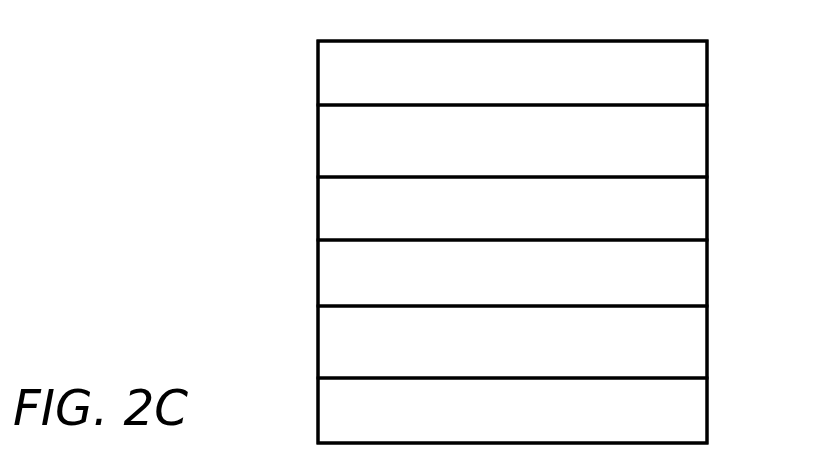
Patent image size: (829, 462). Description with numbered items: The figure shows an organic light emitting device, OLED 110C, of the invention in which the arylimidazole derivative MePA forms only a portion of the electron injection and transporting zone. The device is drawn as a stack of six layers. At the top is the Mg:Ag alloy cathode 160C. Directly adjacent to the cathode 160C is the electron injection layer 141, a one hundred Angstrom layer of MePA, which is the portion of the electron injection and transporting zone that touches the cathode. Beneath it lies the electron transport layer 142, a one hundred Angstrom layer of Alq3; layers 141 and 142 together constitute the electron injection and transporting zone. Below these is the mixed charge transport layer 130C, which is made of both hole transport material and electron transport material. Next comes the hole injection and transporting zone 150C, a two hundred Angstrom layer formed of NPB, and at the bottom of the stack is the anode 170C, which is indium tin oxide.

The OLED 110C is at (303, 57).
The cathode 160C is at (707, 72).
The electron injection layer 141 is at (707, 127).
The electron transport layer 142 is at (707, 209).
The mixed charge transport layer 130C is at (707, 272).
The hole injection and transporting zone 150C is at (707, 330).
The anode 170C is at (707, 392).